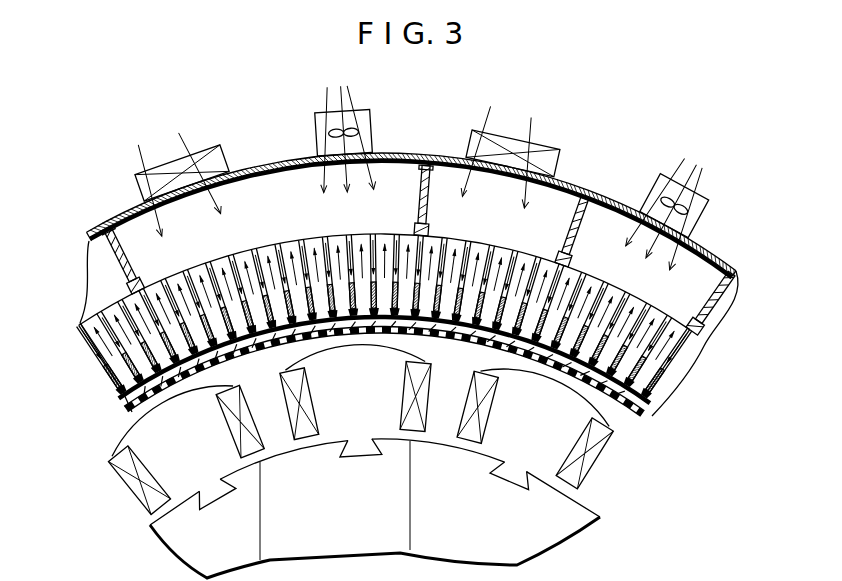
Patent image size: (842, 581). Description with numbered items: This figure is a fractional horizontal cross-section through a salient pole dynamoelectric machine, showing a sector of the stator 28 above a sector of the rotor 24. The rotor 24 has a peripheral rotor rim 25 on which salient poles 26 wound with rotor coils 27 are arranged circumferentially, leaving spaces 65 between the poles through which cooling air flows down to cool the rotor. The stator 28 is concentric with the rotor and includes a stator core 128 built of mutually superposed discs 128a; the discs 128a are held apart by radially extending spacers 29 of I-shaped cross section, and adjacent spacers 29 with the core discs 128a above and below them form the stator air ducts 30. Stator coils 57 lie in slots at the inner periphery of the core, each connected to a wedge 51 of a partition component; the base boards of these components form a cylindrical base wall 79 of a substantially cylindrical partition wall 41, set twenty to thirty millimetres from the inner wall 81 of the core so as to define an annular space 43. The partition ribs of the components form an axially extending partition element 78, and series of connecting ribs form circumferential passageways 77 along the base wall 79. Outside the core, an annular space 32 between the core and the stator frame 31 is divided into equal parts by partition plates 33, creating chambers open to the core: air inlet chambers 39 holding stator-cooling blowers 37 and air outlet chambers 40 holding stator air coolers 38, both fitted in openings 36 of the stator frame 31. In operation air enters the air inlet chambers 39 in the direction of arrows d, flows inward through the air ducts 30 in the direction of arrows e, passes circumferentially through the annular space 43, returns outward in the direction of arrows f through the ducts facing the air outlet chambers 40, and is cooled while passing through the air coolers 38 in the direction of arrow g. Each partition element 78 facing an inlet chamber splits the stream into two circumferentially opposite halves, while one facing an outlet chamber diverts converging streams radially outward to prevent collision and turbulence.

The rotor 24 is at (608, 506).
The rotor rim 25 is at (361, 518).
The salient poles 26 is at (181, 474).
The rotor coils 27 is at (130, 485).
The stator 28 is at (729, 320).
The spacers 29 is at (500, 247).
The stator air ducts 30 is at (94, 315).
The stator frame 31 is at (263, 163).
The annular space 32 is at (90, 263).
The partition plates 33 is at (110, 240).
The openings 36 is at (219, 171).
The stator-cooling blowers 37 is at (373, 115).
The stator air coolers 38 is at (212, 141).
The air inlet chamber 39 is at (414, 166).
The air outlet chamber 40 is at (130, 221).
The partition wall 41 is at (258, 355).
The annular space 43 is at (661, 417).
The wedge 51 is at (152, 400).
The stator coils 57 is at (106, 375).
The spaces 65 is at (277, 433).
The circumferential passageways 77 is at (495, 344).
The partition element 78 is at (360, 337).
The cylindrical base wall 79 is at (543, 381).
The inner wall 81 is at (243, 257).
The stator core 128 is at (683, 362).
The discs 128a is at (83, 345).
The arrows d is at (518, 166).
The arrows e is at (337, 253).
The arrows f is at (213, 297).
The arrow g is at (186, 142).